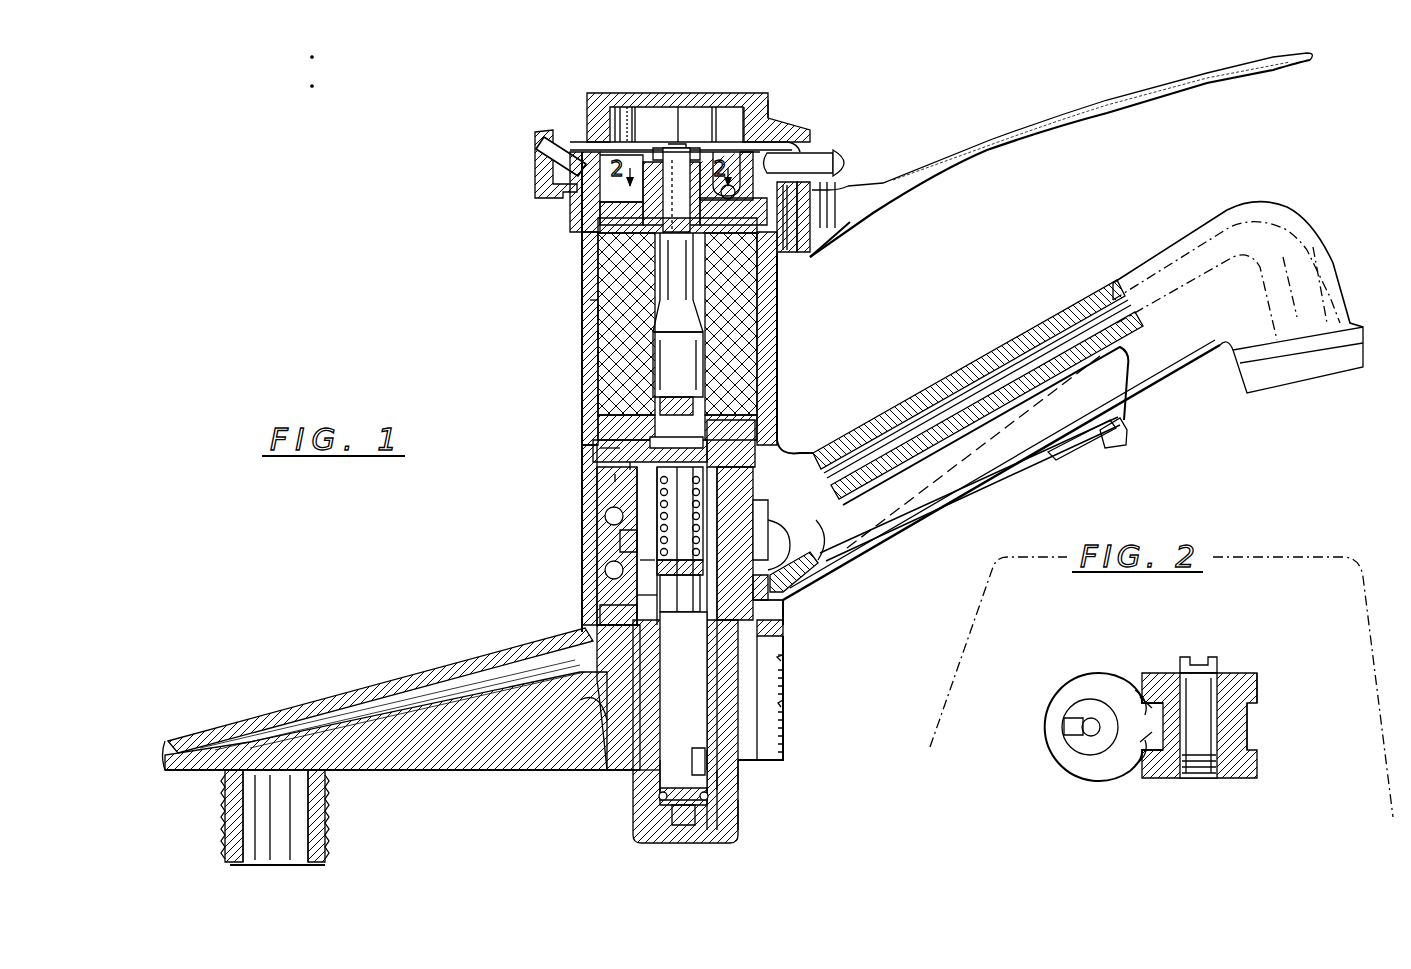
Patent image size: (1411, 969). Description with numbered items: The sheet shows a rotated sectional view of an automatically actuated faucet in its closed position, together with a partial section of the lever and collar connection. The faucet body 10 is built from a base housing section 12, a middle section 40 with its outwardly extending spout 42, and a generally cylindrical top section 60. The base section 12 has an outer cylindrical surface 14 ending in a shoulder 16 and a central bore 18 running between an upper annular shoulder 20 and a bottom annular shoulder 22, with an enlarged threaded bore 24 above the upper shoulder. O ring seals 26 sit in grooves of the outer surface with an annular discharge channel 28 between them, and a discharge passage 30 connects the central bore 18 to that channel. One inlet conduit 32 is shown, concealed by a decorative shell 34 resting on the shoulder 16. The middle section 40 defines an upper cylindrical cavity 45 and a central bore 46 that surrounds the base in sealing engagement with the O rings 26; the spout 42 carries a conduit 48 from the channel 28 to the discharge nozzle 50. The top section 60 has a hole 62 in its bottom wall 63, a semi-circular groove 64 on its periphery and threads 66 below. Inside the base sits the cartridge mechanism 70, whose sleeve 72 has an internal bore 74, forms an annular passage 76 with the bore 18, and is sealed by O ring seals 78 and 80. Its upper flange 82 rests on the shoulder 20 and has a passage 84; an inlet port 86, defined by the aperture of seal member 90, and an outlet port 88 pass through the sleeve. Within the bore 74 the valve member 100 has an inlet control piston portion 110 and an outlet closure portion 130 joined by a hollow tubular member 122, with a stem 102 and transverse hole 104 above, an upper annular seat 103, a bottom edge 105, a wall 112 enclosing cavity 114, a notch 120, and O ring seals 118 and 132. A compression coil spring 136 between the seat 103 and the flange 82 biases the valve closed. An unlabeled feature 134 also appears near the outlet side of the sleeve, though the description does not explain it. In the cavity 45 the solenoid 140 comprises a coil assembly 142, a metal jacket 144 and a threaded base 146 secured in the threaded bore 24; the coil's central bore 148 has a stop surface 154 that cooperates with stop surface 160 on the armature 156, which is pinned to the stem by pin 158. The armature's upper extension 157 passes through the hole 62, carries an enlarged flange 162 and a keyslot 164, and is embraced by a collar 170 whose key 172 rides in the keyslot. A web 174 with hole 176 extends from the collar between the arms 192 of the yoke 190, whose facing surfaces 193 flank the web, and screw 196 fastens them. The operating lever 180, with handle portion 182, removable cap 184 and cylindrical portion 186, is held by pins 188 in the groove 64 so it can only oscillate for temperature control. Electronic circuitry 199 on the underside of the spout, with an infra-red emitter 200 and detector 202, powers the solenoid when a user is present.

In FIG. 1, the faucet body 10 is at (383, 322).
In FIG. 1, the base housing section 12 is at (600, 648).
In FIG. 1, the outer cylindrical surface 14 is at (680, 594).
In FIG. 1, the shoulder 16 is at (530, 633).
In FIG. 1, the central bore 18 is at (645, 565).
In FIG. 1, the upper annular shoulder 20 is at (612, 500).
In FIG. 1, the bottom annular shoulder 22 is at (703, 843).
In FIG. 1, the threaded bore 24 is at (625, 462).
In FIG. 1, the O ring seals 26 is at (607, 518).
In FIG. 1, the discharge channel 28 is at (615, 540).
In FIG. 1, the discharge passage 30 is at (760, 580).
In FIG. 1, the inlet conduit 32 is at (335, 810).
In FIG. 1, the decorative shell 34 is at (330, 725).
In FIG. 1, the middle section 40 is at (782, 416).
In FIG. 1, the spout 42 is at (897, 416).
In FIG. 1, the cylindrical cavity 45 is at (595, 372).
In FIG. 1, the central bore 46 is at (600, 650).
In FIG. 1, the conduit 48 is at (935, 395).
In FIG. 1, the discharge nozzle 50 is at (1275, 398).
In FIG. 1, the top section 60 is at (545, 188).
In FIG. 1, the hole 62 is at (625, 262).
In FIG. 1, the bottom wall 63 is at (600, 228).
In FIG. 1, the groove 64 is at (772, 174).
In FIG. 1, the threads 66 is at (570, 207).
In FIG. 1, the cartridge mechanism 70 is at (720, 708).
In FIG. 1, the sleeve 72 is at (785, 752).
In FIG. 1, the internal bore 74 is at (785, 683).
In FIG. 1, the annular passage 76 is at (785, 662).
In FIG. 1, the O ring seal 78 is at (826, 465).
In FIG. 1, the O ring seal 80 is at (742, 820).
In FIG. 1, the upper flange 82 is at (620, 478).
In FIG. 1, the passage 84 is at (640, 466).
In FIG. 1, the inlet port 86 is at (684, 690).
In FIG. 1, the outlet port 88 is at (792, 608).
In FIG. 1, the seal member 90 is at (660, 812).
In FIG. 1, the valve member 100 is at (719, 760).
In FIG. 1, the stem 102 is at (673, 392).
In FIG. 1, the upper annular seat 103 is at (640, 562).
In FIG. 1, the transverse hole 104 is at (615, 450).
In FIG. 1, the bottom edge 105 is at (783, 620).
In FIG. 1, the inlet control piston portion 110 is at (722, 805).
In FIG. 1, the wall 112 is at (640, 772).
In FIG. 1, the cavity 114 is at (660, 775).
In FIG. 1, the O ring seal 118 is at (676, 830).
In FIG. 1, the notch 120 is at (720, 780).
In FIG. 1, the hollow tubular member 122 is at (607, 705).
In FIG. 1, the outlet closure portion 130 is at (612, 612).
In FIG. 1, the O ring seal 132 is at (640, 600).
In FIG. 1, the outlet port 134 is at (770, 540).
In FIG. 1, the compression coil spring 136 is at (679, 576).
In FIG. 1, the solenoid 140 is at (590, 300).
In FIG. 1, the coil assembly 142 is at (600, 312).
In FIG. 1, the metal jacket 144 is at (600, 335).
In FIG. 1, the threaded base 146 is at (600, 447).
In FIG. 1, the central bore 148 is at (610, 358).
In FIG. 1, the stop surface 154 is at (705, 300).
In FIG. 1, the armature 156 is at (600, 400).
In FIG. 1, the upper extension 157 is at (835, 238).
In FIG. 2, the upper extension 157 is at (1082, 712).
In FIG. 1, the pin 158 is at (735, 355).
In FIG. 1, the stop surface 160 is at (718, 325).
In FIG. 1, the enlarged flange 162 is at (655, 150).
In FIG. 2, the keyslot 164 is at (1090, 760).
In FIG. 1, the collar 170 is at (563, 168).
In FIG. 2, the collar 170 is at (1115, 700).
In FIG. 2, the key 172 is at (1075, 733).
In FIG. 1, the web 174 is at (780, 210).
In FIG. 2, the web 174 is at (1218, 782).
In FIG. 2, the hole 176 is at (1250, 728).
In FIG. 1, the operating lever 180 is at (790, 116).
In FIG. 1, the handle portion 182 is at (990, 152).
In FIG. 1, the removable cap 184 is at (662, 93).
In FIG. 1, the cylindrical portion 186 is at (550, 130).
In FIG. 1, the pins 188 is at (845, 162).
In FIG. 1, the yoke 190 is at (734, 136).
In FIG. 2, the yoke 190 is at (1290, 655).
In FIG. 1, the arms 192 is at (772, 110).
In FIG. 2, the arms 192 is at (1259, 694).
In FIG. 2, the facing surfaces 193 is at (1150, 697).
In FIG. 1, the screw 196 is at (850, 172).
In FIG. 2, the screw 196 is at (1232, 672).
In FIG. 1, the electronic circuitry 199 is at (958, 470).
In FIG. 1, the infra-red emitter 200 is at (1122, 448).
In FIG. 1, the infra-red detector 202 is at (1072, 458).